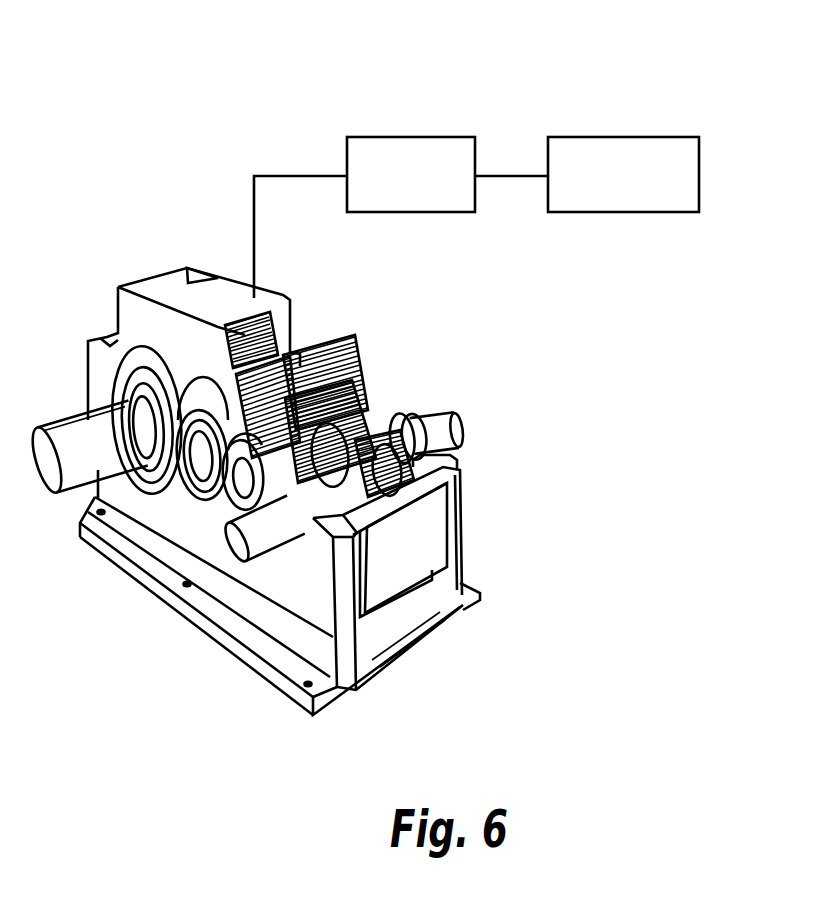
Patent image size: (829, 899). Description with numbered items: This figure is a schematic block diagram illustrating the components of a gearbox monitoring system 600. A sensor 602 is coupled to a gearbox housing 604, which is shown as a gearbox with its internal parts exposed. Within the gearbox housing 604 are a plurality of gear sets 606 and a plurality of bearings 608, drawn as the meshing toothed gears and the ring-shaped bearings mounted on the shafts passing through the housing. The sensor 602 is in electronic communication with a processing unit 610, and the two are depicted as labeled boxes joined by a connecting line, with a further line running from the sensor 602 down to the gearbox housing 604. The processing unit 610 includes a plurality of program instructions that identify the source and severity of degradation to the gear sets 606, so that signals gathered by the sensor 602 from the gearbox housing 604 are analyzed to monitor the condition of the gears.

The gearbox monitoring system 600 is at (165, 50).
The sensor 602 is at (431, 137).
The gearbox housing 604 is at (181, 293).
The gear sets 606 is at (225, 498).
The bearings 608 is at (167, 437).
The processing unit 610 is at (654, 137).